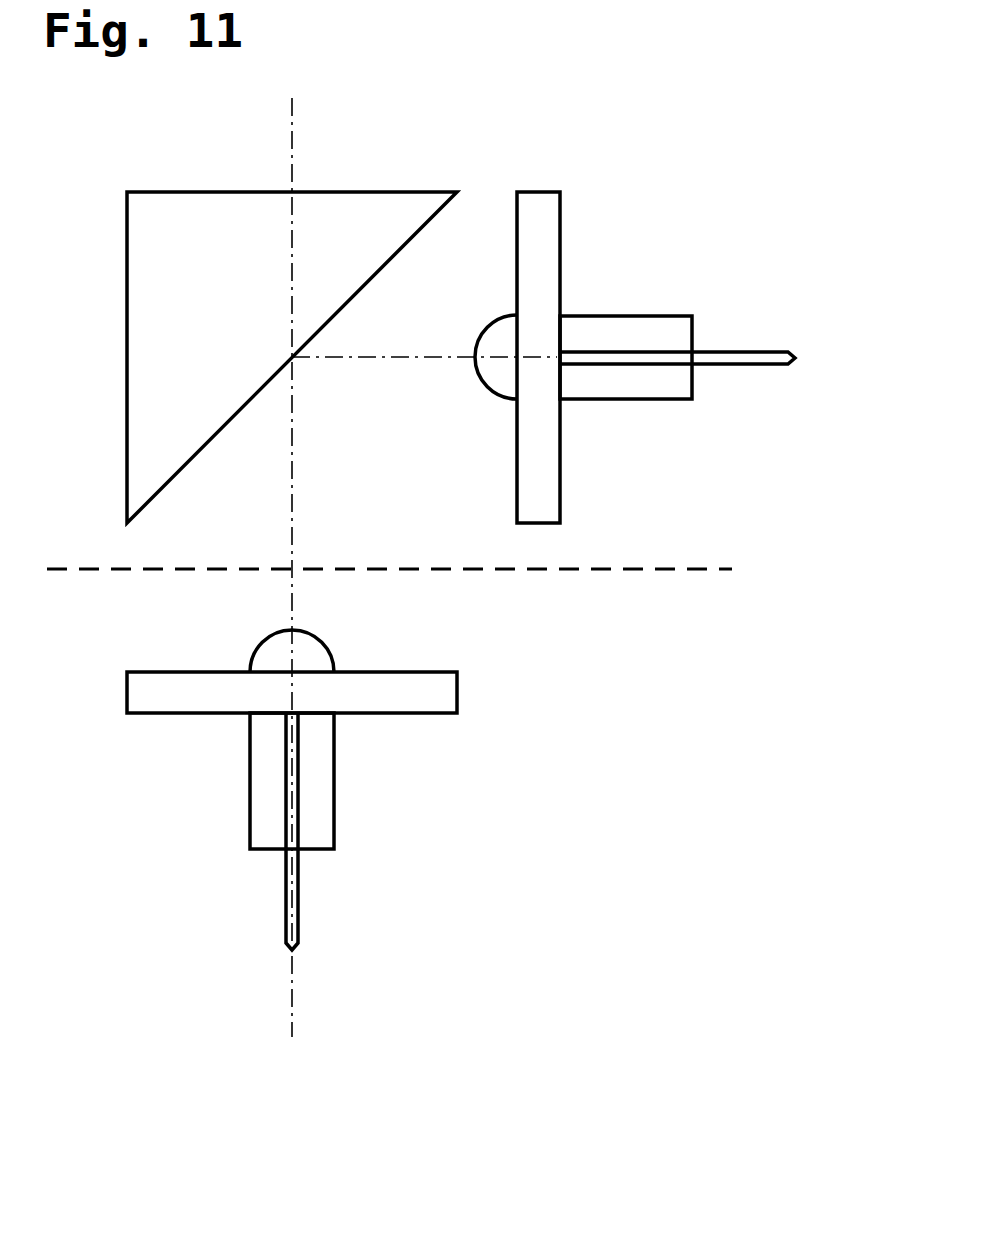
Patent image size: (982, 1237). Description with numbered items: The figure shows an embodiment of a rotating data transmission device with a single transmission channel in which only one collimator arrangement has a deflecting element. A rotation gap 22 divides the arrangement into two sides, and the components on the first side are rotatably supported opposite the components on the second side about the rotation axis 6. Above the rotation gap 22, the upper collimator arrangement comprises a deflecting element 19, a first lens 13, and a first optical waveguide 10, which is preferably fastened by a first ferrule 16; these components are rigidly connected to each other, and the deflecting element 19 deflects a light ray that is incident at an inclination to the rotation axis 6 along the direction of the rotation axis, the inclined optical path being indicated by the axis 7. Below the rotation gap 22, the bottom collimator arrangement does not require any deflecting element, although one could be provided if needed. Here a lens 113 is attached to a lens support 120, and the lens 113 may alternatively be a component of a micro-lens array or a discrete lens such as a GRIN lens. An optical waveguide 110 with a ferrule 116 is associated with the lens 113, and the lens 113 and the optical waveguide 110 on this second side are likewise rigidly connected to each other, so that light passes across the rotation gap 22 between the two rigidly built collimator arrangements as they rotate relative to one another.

The rotation axis 6 is at (272, 151).
The optical axis 7 is at (402, 362).
The first optical waveguide 10 is at (803, 347).
The lens 13 is at (498, 348).
The first ferrule 16 is at (702, 333).
The deflecting element 19 is at (292, 357).
The rotation gap 22 is at (515, 573).
The optical waveguide 110 is at (300, 958).
The lens 113 is at (302, 652).
The ferrule 116 is at (315, 858).
The lens support 120 is at (125, 697).